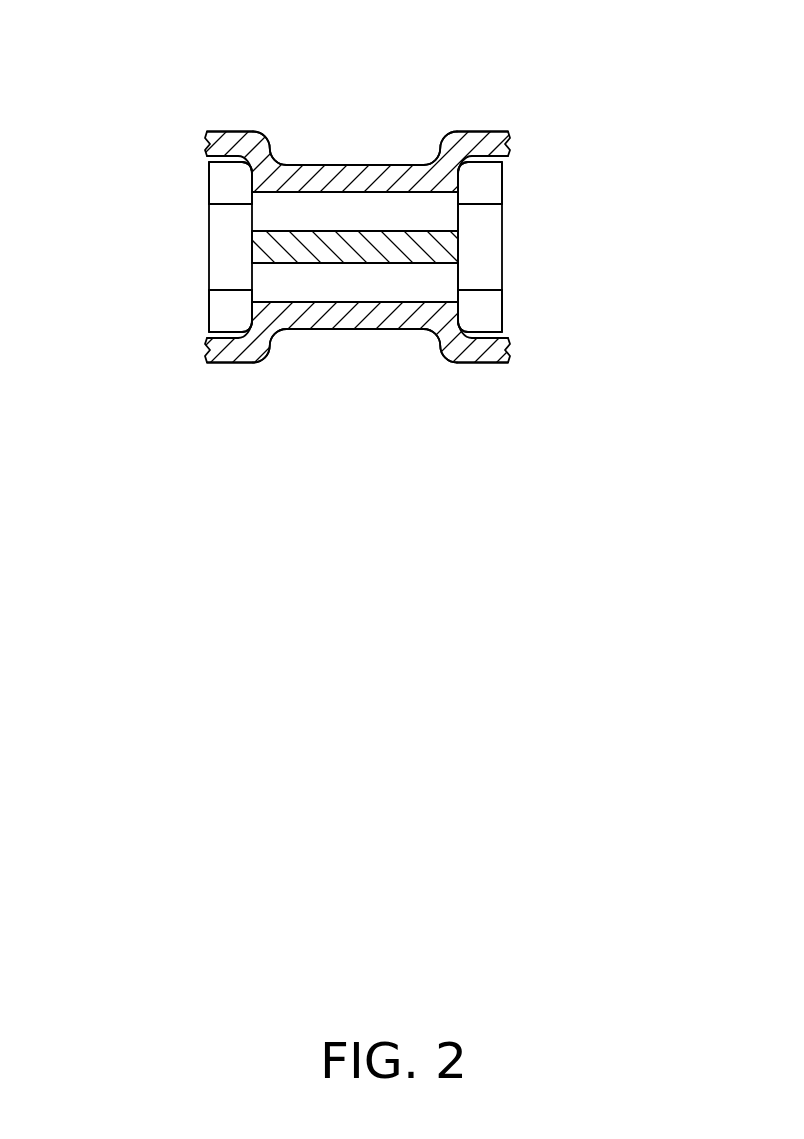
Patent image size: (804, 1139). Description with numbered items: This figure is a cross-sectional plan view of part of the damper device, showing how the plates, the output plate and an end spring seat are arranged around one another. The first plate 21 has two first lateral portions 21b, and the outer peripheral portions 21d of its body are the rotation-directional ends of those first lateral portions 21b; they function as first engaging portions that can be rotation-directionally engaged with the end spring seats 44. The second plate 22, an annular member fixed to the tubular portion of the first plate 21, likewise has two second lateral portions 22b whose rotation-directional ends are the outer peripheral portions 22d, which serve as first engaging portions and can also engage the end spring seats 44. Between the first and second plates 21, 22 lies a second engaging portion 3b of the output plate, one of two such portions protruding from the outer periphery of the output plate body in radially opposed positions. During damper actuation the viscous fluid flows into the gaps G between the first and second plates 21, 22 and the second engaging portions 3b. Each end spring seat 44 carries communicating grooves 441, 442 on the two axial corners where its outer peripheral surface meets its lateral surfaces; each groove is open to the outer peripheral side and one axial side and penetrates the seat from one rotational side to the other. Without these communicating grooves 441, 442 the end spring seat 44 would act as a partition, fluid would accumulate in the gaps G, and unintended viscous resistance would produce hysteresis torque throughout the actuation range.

The second plate 22 is at (372, 145).
The second lateral portion 22b is at (213, 140).
The outer peripheral portion 22d is at (268, 155).
The first plate 21 is at (241, 379).
The first lateral portion 21b is at (214, 357).
The outer peripheral portion 21d is at (272, 338).
The second engaging portion 3b is at (357, 258).
The end spring seat 44 is at (228, 244).
The communicating groove 441 is at (218, 312).
The communicating groove 442 is at (226, 190).
The gap G is at (441, 210).